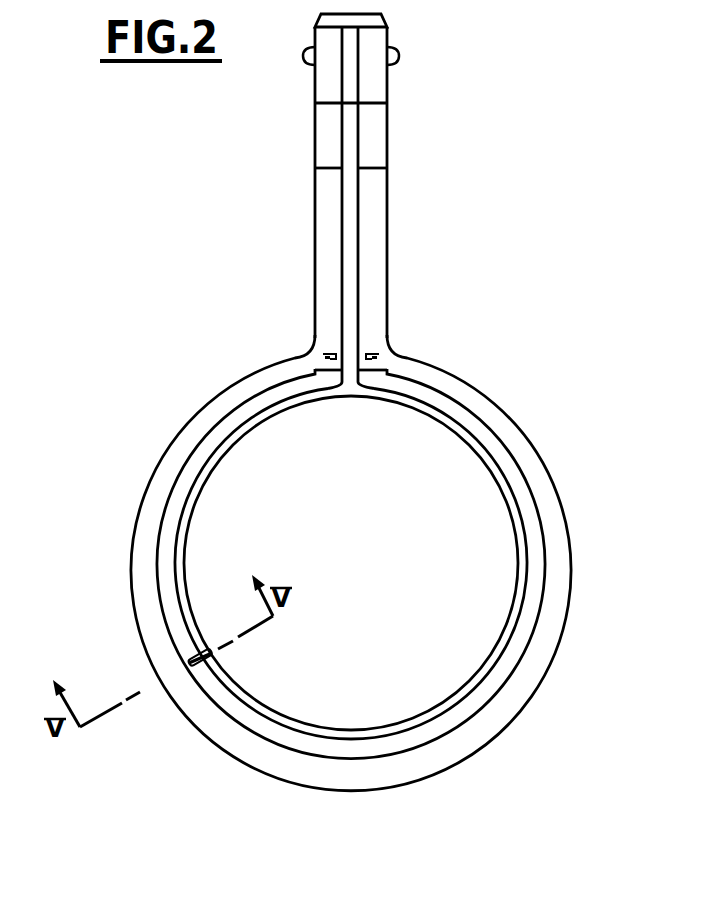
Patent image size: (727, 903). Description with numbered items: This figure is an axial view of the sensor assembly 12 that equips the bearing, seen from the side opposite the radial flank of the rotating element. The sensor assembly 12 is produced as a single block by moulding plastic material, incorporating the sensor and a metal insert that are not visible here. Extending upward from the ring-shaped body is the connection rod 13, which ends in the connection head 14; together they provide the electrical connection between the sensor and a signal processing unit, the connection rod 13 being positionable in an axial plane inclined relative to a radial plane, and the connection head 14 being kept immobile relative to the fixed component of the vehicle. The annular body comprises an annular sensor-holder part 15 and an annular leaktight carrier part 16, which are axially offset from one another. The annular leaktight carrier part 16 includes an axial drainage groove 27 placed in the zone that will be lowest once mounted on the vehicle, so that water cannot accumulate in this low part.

The sensor assembly 12 is at (570, 468).
The connection rod 13 is at (366, 246).
The connection head 14 is at (363, 43).
The annular sensor-holder part 15 is at (557, 547).
The annular leaktight carrier part 16 is at (527, 600).
The axial drainage groove 27 is at (200, 662).